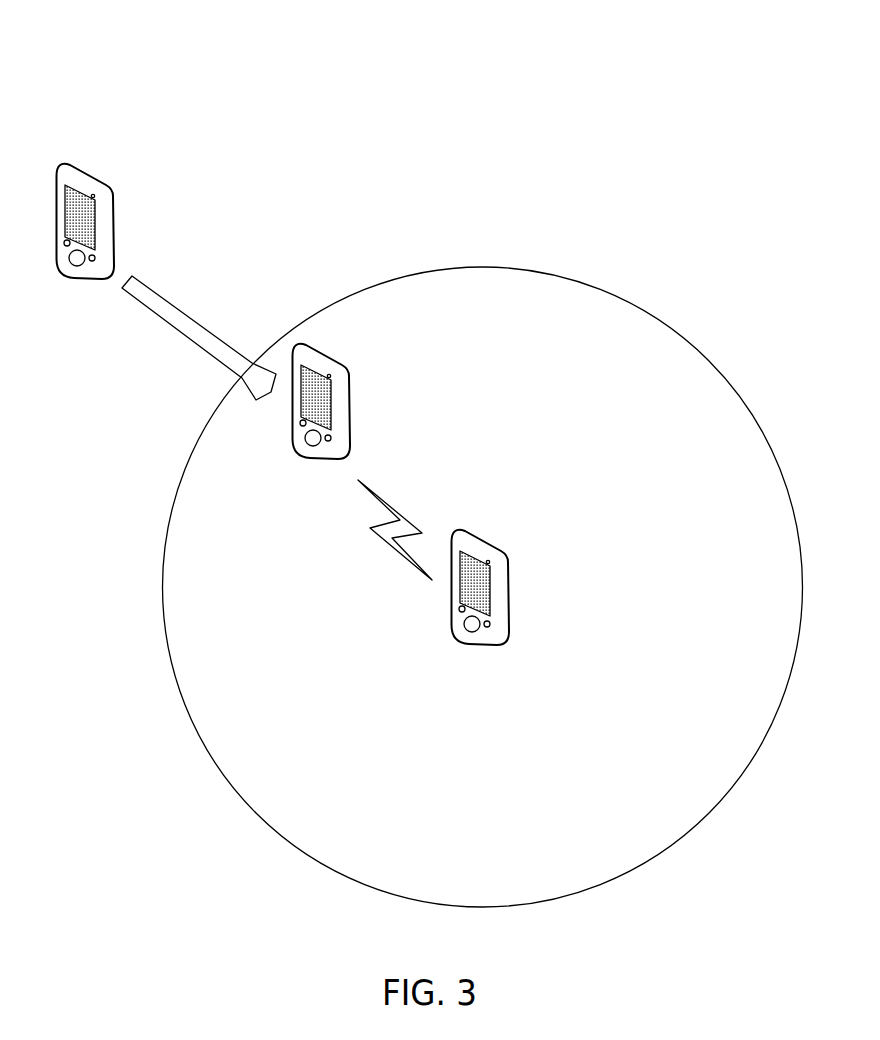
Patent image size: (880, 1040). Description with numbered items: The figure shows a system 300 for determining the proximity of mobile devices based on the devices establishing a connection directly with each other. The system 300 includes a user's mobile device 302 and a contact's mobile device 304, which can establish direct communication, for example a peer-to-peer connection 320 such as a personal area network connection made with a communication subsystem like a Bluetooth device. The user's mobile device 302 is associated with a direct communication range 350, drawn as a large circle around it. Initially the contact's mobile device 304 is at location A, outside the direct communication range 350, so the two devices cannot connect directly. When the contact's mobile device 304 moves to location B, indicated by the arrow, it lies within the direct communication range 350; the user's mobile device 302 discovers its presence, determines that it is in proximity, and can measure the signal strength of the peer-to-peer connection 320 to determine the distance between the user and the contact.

The system 300 is at (131, 75).
The user's mobile device 302 is at (510, 558).
The contact's mobile device 304 is at (113, 192).
The peer-to-peer connection 320 is at (397, 509).
The direct communication range 350 is at (713, 365).